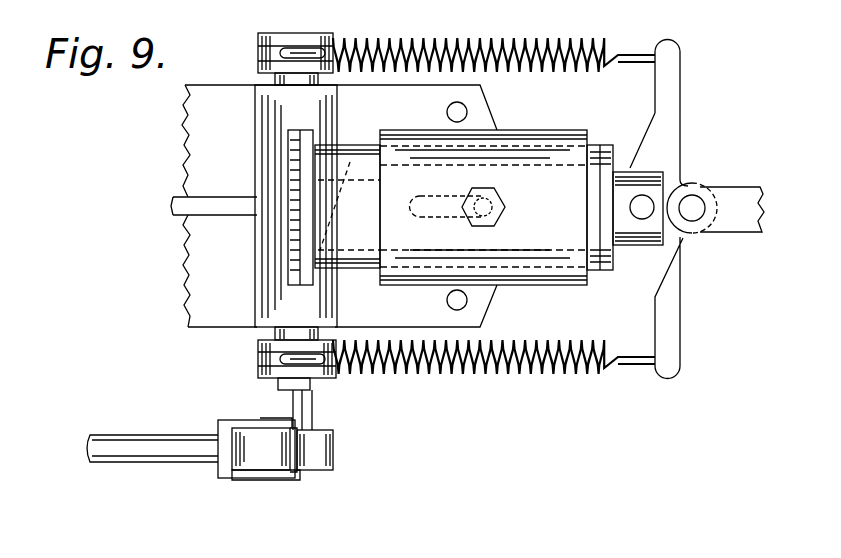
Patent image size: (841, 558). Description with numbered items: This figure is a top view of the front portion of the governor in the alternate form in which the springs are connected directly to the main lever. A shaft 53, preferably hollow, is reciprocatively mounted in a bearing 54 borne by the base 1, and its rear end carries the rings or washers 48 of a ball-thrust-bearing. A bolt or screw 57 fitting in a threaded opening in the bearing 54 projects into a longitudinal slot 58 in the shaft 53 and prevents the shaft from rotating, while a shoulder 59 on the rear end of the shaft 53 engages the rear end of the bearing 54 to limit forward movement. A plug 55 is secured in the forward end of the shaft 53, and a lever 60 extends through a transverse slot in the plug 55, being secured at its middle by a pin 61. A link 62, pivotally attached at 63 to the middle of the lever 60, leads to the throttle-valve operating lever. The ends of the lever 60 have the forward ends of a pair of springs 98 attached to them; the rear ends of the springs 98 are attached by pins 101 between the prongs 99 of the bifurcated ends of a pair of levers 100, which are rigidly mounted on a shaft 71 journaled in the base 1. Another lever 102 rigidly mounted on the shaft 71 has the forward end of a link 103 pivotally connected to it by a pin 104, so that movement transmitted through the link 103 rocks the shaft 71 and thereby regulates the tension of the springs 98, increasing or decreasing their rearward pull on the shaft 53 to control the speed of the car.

The base 1 is at (185, 165).
The rings or washers 48 is at (290, 240).
The shaft 53 is at (347, 206).
The bearing 54 is at (496, 207).
The plug 55 is at (641, 246).
The bolt or screw 57 is at (497, 193).
The longitudinal slot 58 is at (432, 210).
The shoulder 59 is at (310, 147).
The lever 60 is at (659, 209).
The pin 61 is at (640, 196).
The link 62 is at (732, 209).
The pivotal attachment 63 is at (692, 194).
The shaft 71 is at (298, 409).
The springs 98 is at (518, 62).
The prongs 99 is at (322, 52).
The levers 100 is at (258, 52).
The pins 101 is at (290, 33).
The lever 102 is at (300, 448).
The link 103 is at (160, 452).
The pin 104 is at (270, 480).